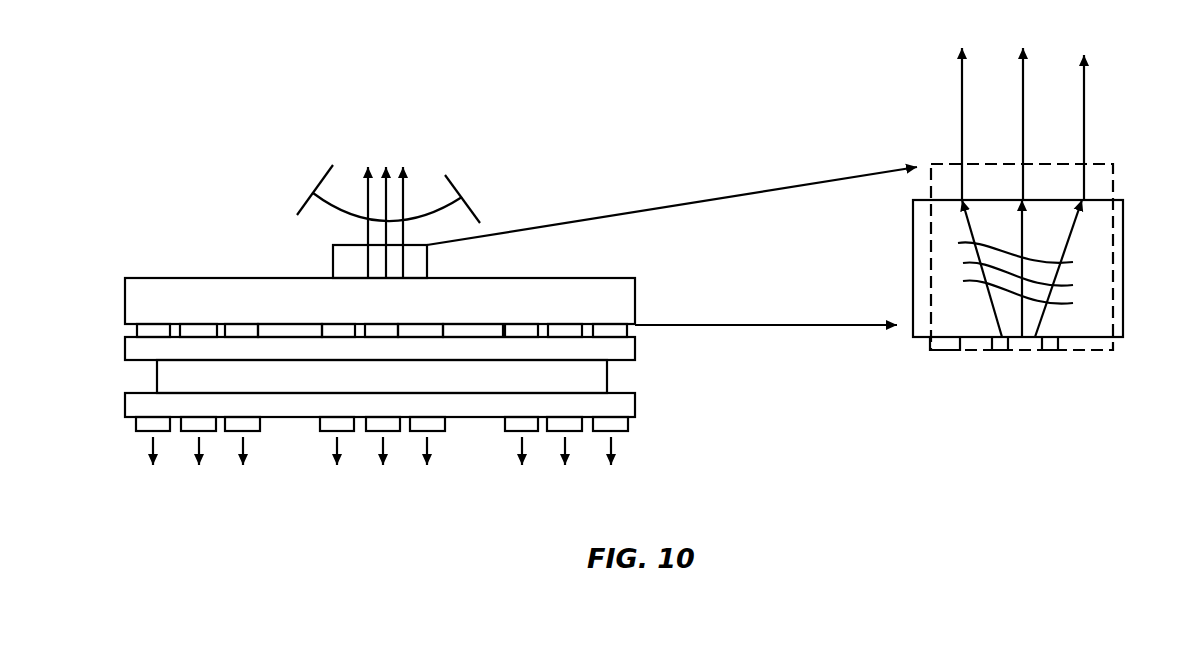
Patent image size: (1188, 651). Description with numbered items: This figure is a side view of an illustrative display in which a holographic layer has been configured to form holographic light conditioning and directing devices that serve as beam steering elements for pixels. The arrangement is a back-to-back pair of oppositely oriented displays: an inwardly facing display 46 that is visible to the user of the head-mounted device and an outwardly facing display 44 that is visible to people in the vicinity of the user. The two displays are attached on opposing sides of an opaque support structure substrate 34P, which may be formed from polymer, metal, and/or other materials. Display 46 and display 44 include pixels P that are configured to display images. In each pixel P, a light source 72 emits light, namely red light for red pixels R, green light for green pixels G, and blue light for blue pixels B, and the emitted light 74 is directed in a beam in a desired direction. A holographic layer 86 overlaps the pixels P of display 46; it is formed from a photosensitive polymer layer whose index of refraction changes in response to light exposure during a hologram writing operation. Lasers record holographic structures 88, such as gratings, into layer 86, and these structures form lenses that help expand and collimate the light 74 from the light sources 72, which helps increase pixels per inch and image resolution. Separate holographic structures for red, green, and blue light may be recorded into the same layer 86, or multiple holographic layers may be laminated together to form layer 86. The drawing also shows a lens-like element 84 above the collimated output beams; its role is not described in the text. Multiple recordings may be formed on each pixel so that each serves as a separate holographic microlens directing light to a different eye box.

The support structure substrate 34P is at (157, 372).
The outwardly facing display 44 is at (643, 417).
The inwardly facing display 46 is at (648, 303).
The light source 72 is at (637, 330).
The emitted light 74 is at (1023, 90).
The lens 84 is at (458, 193).
The holographic layer 86 is at (618, 290).
The holographic structures 88 is at (1063, 262).
The blue pixels B is at (152, 330).
The green pixels G is at (195, 330).
The red pixels R is at (242, 330).
The pixels P is at (535, 313).